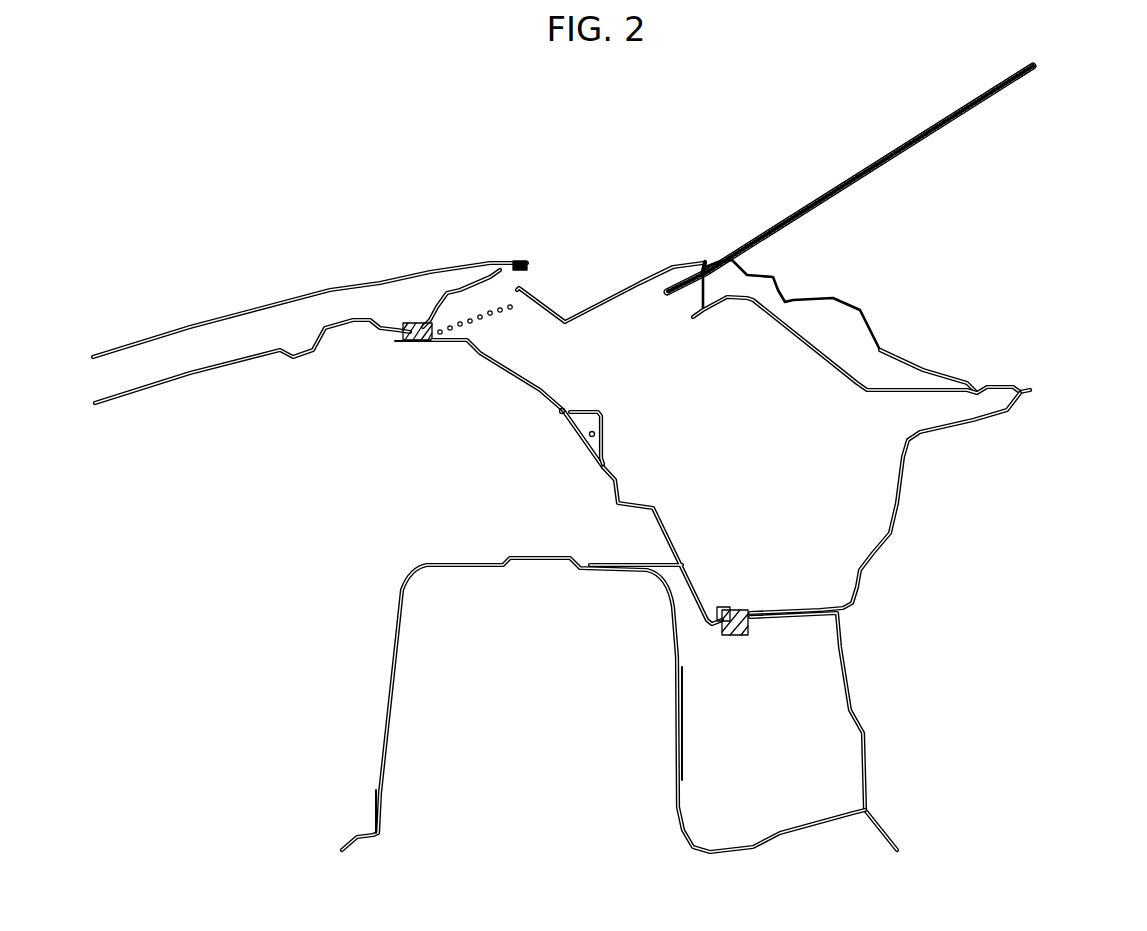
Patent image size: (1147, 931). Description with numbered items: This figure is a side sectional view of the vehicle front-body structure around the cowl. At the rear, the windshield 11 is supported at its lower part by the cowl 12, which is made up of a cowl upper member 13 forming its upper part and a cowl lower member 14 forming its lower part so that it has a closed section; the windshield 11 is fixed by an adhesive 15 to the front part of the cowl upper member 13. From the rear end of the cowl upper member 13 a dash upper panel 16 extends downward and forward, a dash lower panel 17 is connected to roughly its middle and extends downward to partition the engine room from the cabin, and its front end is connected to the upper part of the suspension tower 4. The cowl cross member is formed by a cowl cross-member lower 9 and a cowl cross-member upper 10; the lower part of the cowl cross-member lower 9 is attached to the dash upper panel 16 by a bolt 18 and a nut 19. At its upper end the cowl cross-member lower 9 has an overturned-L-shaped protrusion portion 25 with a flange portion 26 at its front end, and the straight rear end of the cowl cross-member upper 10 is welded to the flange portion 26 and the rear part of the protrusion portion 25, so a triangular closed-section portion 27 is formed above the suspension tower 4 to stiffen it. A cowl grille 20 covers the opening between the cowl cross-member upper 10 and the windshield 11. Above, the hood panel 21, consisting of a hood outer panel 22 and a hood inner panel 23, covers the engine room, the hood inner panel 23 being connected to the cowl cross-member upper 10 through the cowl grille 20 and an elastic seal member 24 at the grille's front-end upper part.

The suspension tower 4 is at (397, 637).
The cowl cross-member lower 9 is at (678, 550).
The cowl cross-member upper 10 is at (512, 382).
The windshield 11 is at (923, 138).
The cowl 12 is at (908, 360).
The cowl upper member 13 is at (885, 351).
The cowl lower member 14 is at (887, 390).
The adhesive 15 is at (707, 268).
The dash upper panel 16 is at (898, 510).
The dash lower panel 17 is at (866, 737).
The bolt 18 is at (748, 607).
The nut 19 is at (750, 625).
The cowl grille 20 is at (613, 293).
The hood panel 21 is at (310, 252).
The hood outer panel 22 is at (347, 287).
The hood inner panel 23 is at (198, 372).
The elastic seal member 24 is at (414, 323).
The protrusion portion 25 is at (604, 434).
The flange portion 26 is at (562, 412).
The closed-section portion 27 is at (591, 433).